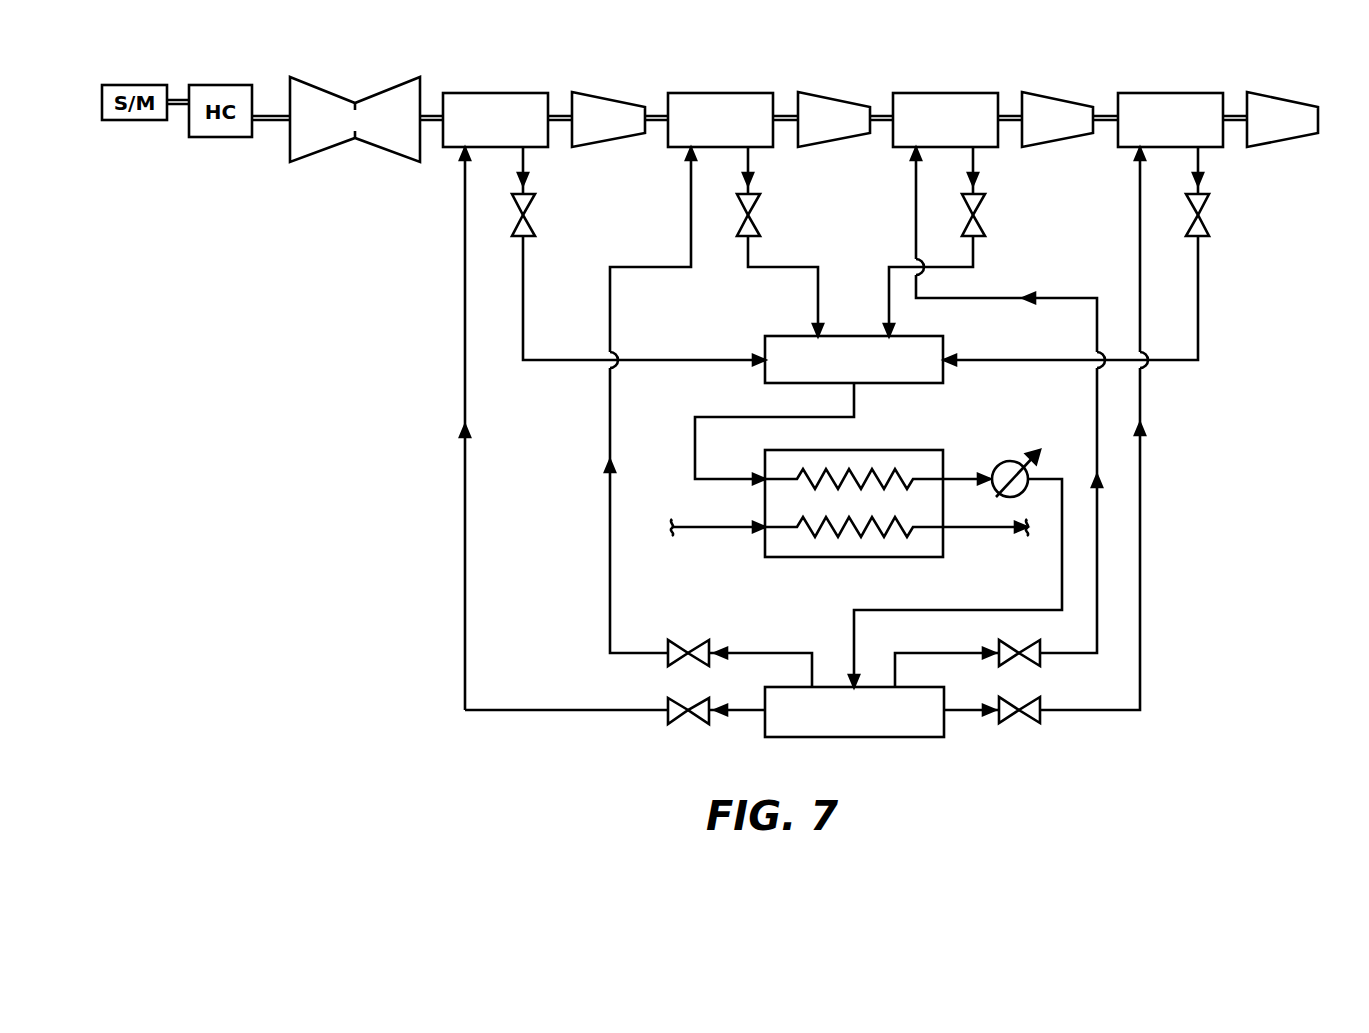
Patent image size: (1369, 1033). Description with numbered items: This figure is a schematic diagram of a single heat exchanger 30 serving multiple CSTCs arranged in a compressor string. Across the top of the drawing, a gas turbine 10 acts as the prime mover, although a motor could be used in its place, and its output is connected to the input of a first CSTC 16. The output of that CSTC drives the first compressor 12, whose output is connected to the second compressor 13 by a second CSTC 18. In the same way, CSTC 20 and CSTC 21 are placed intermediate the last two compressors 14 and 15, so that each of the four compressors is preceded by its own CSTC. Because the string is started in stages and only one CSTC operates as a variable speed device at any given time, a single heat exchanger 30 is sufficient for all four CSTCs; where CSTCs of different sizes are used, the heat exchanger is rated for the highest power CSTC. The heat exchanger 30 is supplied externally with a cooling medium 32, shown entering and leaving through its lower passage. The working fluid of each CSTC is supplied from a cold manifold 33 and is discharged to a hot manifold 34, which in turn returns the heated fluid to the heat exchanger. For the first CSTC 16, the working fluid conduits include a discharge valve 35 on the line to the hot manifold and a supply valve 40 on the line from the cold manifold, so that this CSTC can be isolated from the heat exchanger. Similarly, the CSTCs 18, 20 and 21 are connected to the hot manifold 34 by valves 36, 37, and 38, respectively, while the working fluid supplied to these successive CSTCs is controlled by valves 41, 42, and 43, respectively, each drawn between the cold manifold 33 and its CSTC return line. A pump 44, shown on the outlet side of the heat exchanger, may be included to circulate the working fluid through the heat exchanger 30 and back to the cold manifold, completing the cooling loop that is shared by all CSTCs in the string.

The gas turbine 10 is at (403, 78).
The first compressor 12 is at (606, 92).
The second compressor 13 is at (832, 92).
The compressor 14 is at (1056, 92).
The compressor 15 is at (1282, 92).
The first CSTC 16 is at (524, 93).
The second CSTC 18 is at (749, 93).
The CSTC 20 is at (974, 93).
The CSTC 21 is at (1199, 93).
The heat exchanger 30 is at (893, 450).
The cooling medium 32 is at (723, 530).
The cold manifold 33 is at (903, 737).
The hot manifold 34 is at (928, 336).
The discharge valve 35 is at (530, 230).
The valve 36 is at (755, 230).
The valve 37 is at (980, 230).
The valve 38 is at (1205, 230).
The supply valve 40 is at (684, 702).
The valve 41 is at (684, 645).
The valve 42 is at (1028, 645).
The valve 43 is at (1028, 702).
The pump 44 is at (1000, 463).